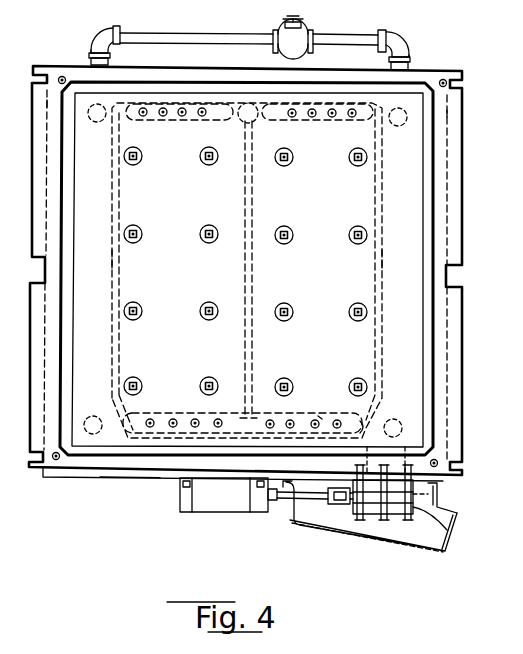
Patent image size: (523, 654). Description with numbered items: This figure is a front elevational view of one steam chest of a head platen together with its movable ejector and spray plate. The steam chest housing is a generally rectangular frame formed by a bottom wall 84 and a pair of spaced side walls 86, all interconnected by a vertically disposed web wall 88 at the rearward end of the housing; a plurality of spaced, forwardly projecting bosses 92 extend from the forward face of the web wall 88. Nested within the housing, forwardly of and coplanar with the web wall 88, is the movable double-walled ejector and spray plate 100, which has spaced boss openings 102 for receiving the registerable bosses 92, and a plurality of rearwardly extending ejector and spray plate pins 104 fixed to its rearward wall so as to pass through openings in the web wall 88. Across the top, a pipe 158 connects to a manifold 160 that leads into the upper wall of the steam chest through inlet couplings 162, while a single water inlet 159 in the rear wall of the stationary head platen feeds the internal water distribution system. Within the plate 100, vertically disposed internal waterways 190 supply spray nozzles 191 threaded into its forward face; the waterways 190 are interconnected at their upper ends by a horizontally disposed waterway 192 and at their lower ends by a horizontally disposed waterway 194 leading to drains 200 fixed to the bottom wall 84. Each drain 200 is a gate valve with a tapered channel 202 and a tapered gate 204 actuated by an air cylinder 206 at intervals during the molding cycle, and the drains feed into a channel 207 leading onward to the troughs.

The bottom wall 84 is at (132, 464).
The side walls 86 is at (52, 161).
The web wall 88 is at (83, 451).
The bosses 92 is at (202, 161).
The ejector and spray plate 100 is at (287, 271).
The boss openings 102 is at (350, 162).
The ejector and spray plate pins 104 is at (393, 418).
The pipe 158 is at (310, 19).
The water inlet 159 is at (246, 103).
The manifold 160 is at (207, 43).
The inlet couplings 162 is at (108, 58).
The internal waterways 190 is at (116, 261).
The spray nozzles 191 is at (166, 118).
The horizontally disposed waterway 192 is at (212, 166).
The horizontally disposed waterway 194 is at (320, 417).
The drains 200 is at (448, 520).
The tapered channel 202 is at (437, 493).
The tapered gate 204 is at (367, 526).
The air cylinder 206 is at (223, 508).
The channel 207 is at (438, 544).